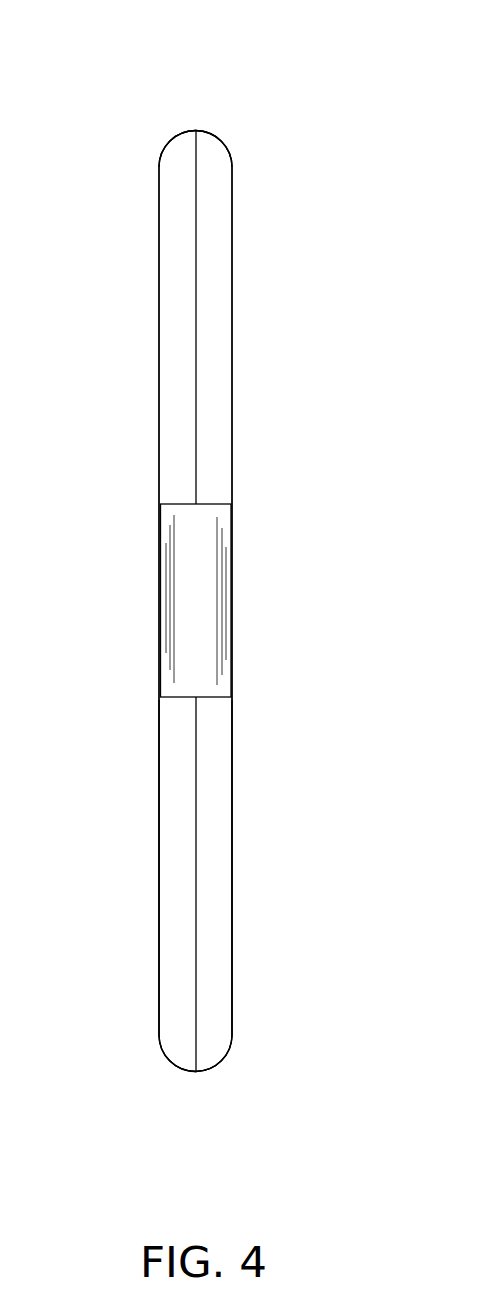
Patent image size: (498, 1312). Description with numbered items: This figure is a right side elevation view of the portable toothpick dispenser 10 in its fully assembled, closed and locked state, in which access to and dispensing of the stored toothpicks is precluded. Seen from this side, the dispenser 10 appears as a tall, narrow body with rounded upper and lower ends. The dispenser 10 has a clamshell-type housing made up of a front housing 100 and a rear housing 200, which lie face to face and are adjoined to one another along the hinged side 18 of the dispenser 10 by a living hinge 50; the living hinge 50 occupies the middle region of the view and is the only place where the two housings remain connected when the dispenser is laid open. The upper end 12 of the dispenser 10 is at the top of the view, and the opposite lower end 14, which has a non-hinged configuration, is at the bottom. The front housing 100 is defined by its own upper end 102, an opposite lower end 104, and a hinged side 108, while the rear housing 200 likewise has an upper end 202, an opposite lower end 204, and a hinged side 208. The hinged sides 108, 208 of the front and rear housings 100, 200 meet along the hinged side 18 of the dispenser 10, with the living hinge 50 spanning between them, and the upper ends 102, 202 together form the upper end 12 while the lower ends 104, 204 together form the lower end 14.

The portable toothpick dispenser 10 is at (293, 265).
The upper end 12 is at (196, 120).
The lower end 14 is at (196, 1080).
The hinged side 18 is at (195, 423).
The living hinge 50 is at (200, 615).
The front housing 100 is at (160, 393).
The upper end 102 is at (178, 130).
The lower end 104 is at (178, 1068).
The hinged side 108 is at (175, 815).
The rear housing 200 is at (233, 395).
The upper end 202 is at (210, 130).
The lower end 204 is at (212, 1068).
The hinged side 208 is at (213, 815).